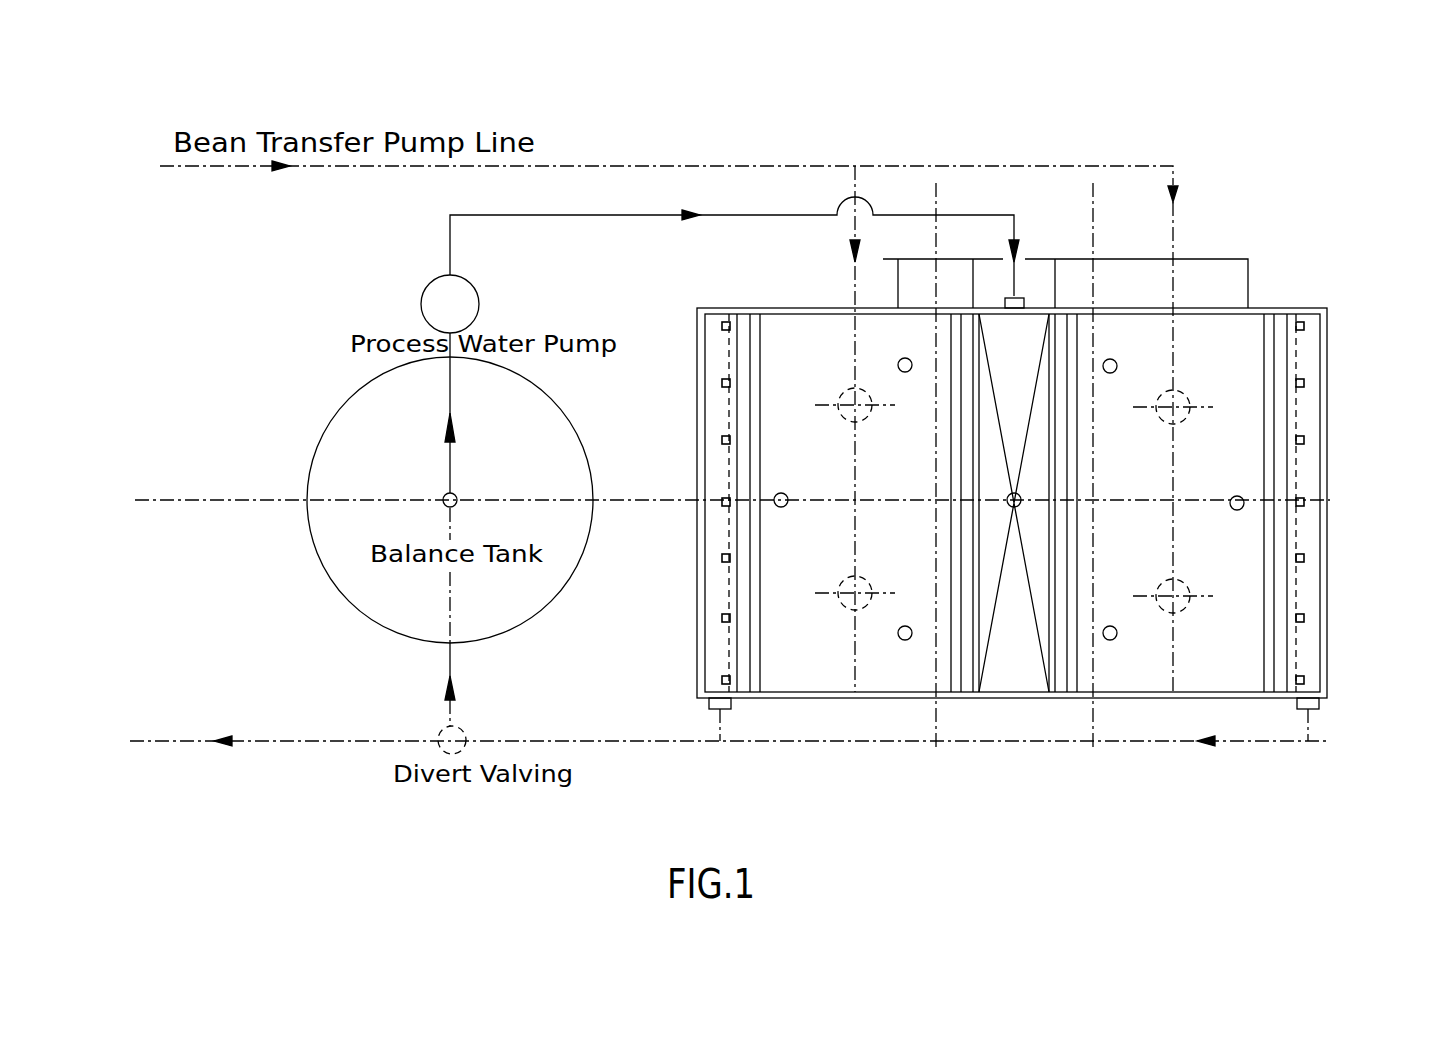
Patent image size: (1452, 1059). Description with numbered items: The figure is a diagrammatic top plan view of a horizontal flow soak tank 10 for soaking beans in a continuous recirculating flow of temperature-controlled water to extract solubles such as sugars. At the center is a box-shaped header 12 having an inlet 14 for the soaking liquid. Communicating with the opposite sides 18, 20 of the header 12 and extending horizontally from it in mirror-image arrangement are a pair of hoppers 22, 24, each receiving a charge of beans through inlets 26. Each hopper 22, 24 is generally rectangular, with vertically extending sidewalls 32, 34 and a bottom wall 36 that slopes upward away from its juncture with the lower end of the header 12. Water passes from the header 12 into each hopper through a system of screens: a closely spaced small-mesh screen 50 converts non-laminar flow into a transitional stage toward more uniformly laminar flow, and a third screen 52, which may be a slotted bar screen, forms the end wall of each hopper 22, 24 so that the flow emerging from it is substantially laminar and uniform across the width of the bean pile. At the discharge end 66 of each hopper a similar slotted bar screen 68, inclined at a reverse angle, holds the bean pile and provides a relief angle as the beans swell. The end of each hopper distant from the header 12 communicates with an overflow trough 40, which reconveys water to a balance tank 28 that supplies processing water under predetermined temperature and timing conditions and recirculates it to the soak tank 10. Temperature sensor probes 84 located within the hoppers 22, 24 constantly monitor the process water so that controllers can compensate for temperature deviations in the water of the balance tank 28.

The horizontal flow soak tank 10 is at (1296, 296).
The header 12 is at (1033, 330).
The inlet 14 is at (1018, 296).
The side of header 18 is at (955, 700).
The side of header 20 is at (1068, 700).
The hopper 22 is at (915, 477).
The hopper 24 is at (1140, 477).
The inlet 26 is at (842, 402).
The balance tank 28 is at (348, 400).
The sidewall 32 is at (748, 308).
The sidewall 34 is at (795, 699).
The bottom wall 36 is at (775, 587).
The overflow trough 40 is at (727, 394).
The second screen 50 is at (1003, 690).
The third screen 52 is at (953, 515).
The discharge end 66 is at (697, 562).
The screen 68 is at (752, 440).
The temperature sensor probe 84 is at (900, 358).